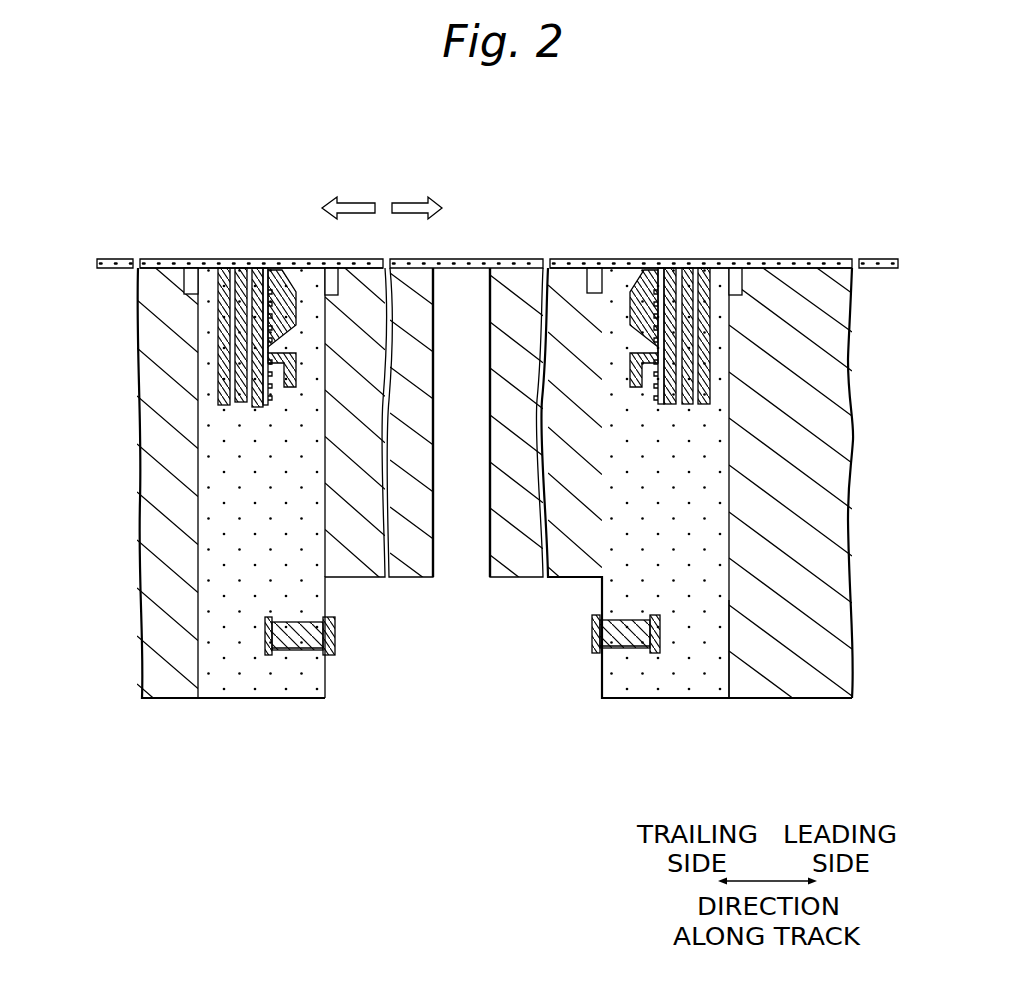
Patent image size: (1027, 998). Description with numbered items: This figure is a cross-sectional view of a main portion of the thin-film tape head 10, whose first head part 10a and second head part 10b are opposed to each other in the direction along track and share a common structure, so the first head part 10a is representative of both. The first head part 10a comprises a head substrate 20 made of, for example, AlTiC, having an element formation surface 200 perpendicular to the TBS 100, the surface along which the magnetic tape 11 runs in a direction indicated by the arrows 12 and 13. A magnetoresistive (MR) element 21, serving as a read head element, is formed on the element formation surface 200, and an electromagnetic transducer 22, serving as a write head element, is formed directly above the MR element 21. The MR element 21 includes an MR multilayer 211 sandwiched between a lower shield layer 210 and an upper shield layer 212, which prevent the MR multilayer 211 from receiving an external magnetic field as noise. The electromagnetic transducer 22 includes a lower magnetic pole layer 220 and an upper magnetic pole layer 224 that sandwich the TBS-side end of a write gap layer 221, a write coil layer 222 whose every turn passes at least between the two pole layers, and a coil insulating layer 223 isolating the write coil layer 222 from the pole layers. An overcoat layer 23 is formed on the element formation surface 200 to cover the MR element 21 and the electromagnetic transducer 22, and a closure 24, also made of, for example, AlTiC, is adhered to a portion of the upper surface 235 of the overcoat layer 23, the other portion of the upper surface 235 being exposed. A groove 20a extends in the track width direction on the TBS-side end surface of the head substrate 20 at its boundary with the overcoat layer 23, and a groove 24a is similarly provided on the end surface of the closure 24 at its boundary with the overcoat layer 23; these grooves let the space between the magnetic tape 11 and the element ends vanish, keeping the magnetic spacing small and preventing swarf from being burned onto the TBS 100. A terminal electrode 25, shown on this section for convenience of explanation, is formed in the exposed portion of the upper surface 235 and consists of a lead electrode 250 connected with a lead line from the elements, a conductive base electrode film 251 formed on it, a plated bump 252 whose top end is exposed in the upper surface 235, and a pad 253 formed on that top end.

The tape head 10 is at (385, 812).
The first head part 10a is at (590, 705).
The second head part 10b is at (330, 716).
The magnetic tape 11 is at (305, 262).
The medium travel direction 12 is at (356, 204).
The medium travel direction 13 is at (406, 204).
The head substrate 20 is at (175, 678).
The groove 20a is at (190, 281).
The magnetoresistive (MR) element 21 is at (229, 258).
The lower shield layer 210 is at (712, 262).
The MR multilayer 211 is at (700, 262).
The upper shield layer 212 is at (690, 262).
The electromagnetic transducer 22 is at (264, 258).
The lower magnetic pole layer 220 is at (680, 270).
The write gap layer 221 is at (668, 275).
The write coil layer 222 is at (659, 285).
The coil insulating layer 223 is at (645, 285).
The upper magnetic pole layer 224 is at (636, 285).
The overcoat layer 23 is at (302, 680).
The upper surface 235 is at (602, 589).
The closure 24 is at (402, 560).
The groove 24a is at (333, 262).
The terminal electrode 25 is at (346, 658).
The lead electrode 250 is at (642, 652).
The base electrode film 251 is at (650, 640).
The bump 252 is at (600, 645).
The pad 253 is at (595, 628).
The TBS 100 is at (600, 268).
The element formation surface 200 is at (728, 685).